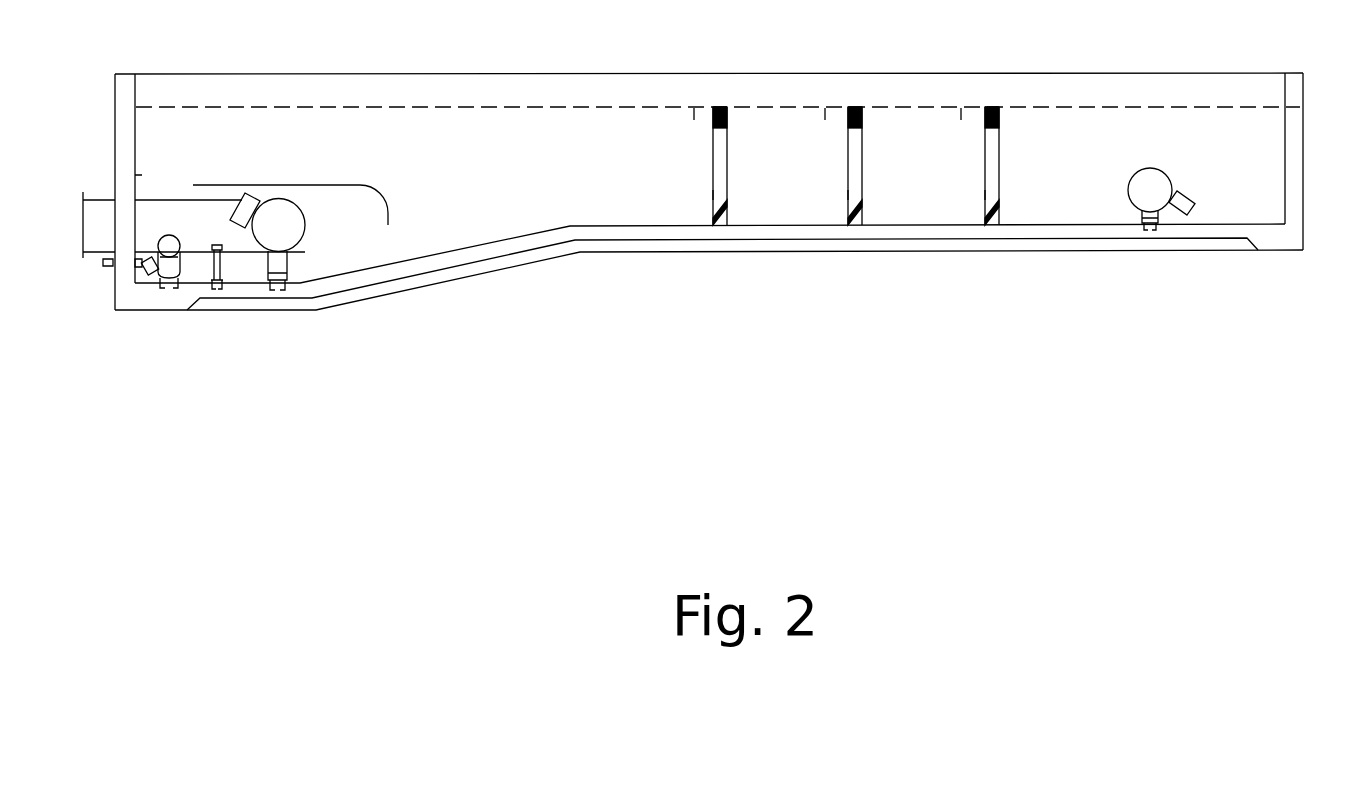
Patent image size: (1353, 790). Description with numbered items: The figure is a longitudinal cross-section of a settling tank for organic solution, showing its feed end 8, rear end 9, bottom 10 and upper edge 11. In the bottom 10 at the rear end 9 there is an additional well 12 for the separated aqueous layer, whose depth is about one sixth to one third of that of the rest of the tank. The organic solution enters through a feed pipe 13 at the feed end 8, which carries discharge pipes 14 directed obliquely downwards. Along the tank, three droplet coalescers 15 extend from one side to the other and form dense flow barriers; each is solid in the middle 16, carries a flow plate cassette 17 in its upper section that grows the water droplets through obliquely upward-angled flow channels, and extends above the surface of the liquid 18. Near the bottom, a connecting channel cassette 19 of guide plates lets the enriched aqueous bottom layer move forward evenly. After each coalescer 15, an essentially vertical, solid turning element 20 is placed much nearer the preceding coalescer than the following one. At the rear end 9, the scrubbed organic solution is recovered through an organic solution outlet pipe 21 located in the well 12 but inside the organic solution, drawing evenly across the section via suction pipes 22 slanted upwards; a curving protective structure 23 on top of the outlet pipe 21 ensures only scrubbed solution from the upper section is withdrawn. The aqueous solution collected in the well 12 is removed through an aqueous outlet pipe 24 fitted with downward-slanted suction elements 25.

The feed end 8 is at (1298, 170).
The rear end 9 is at (119, 118).
The bottom 10 is at (1028, 243).
The upper edge 11 is at (1047, 74).
The additional well 12 is at (302, 268).
The feed pipe 13 is at (1148, 170).
The discharge pipe 14 is at (1187, 200).
The droplet coalescer 15 is at (1013, 139).
The solid middle 16 is at (987, 203).
The flow plate cassette 17 is at (993, 107).
The surface of the liquid 18 is at (577, 108).
The connecting channel cassette 19 is at (1015, 201).
The turning element 20 is at (965, 108).
The organic solution outlet pipe 21 is at (292, 237).
The suction pipe 22 is at (250, 200).
The protective structure 23 is at (388, 205).
The aqueous outlet pipe 24 is at (166, 247).
The suction element 25 is at (152, 272).